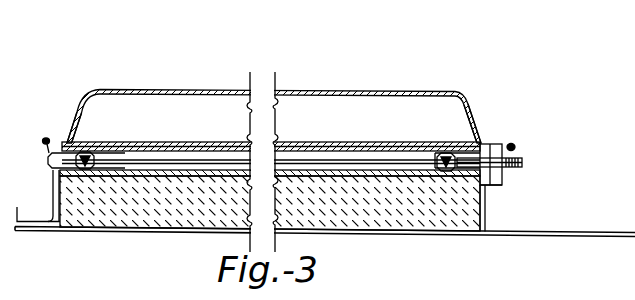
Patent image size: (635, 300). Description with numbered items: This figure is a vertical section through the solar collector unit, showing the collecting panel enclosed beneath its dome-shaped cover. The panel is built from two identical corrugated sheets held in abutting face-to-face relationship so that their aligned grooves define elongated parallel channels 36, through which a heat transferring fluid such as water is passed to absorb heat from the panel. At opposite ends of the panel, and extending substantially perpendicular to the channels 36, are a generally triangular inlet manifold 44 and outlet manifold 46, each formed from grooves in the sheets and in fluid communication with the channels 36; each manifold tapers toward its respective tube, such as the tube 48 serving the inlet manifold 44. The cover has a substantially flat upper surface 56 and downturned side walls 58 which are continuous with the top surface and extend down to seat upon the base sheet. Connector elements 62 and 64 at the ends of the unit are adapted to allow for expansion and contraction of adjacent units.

The channels 36 is at (193, 156).
The inlet manifold 44 is at (442, 150).
The outlet manifold 46 is at (82, 150).
The tube 48 is at (527, 170).
The upper surface 56 is at (343, 95).
The side walls 58 is at (70, 112).
The connector element 62 is at (516, 146).
The connector element 64 is at (50, 137).